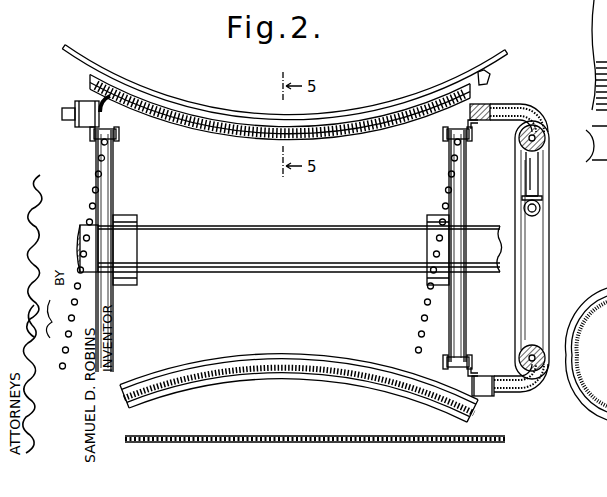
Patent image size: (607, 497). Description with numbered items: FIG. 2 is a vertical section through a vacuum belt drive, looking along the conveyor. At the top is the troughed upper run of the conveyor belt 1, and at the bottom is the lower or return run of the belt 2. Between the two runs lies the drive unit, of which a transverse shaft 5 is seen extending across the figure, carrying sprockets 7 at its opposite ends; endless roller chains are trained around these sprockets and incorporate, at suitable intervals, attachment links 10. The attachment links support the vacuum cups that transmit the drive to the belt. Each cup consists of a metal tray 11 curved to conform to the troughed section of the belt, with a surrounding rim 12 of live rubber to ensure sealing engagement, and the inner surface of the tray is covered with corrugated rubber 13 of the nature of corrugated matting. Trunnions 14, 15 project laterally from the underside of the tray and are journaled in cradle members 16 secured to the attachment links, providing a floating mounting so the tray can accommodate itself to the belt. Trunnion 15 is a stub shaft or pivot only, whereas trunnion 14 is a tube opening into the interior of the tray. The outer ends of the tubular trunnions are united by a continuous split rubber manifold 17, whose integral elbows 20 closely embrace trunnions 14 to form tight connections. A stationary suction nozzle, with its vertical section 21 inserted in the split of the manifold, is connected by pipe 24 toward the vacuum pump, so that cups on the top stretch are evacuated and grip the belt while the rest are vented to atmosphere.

The conveyor belt 1 is at (284, 92).
The lower or return run of the belt 2 is at (284, 436).
The transverse shaft 5 is at (317, 226).
The sprockets 7 is at (114, 199).
The attachment links 10 is at (94, 136).
The metal tray 11 is at (333, 135).
The rim 12 is at (486, 70).
The corrugated rubber 13 is at (240, 116).
The trunnion 14 is at (500, 106).
The trunnion 15 is at (62, 110).
The cradle members 16 is at (75, 126).
The manifold 17 is at (546, 142).
The elbows 20 is at (538, 116).
The vertical section 21 is at (538, 178).
The pipe 24 is at (542, 208).